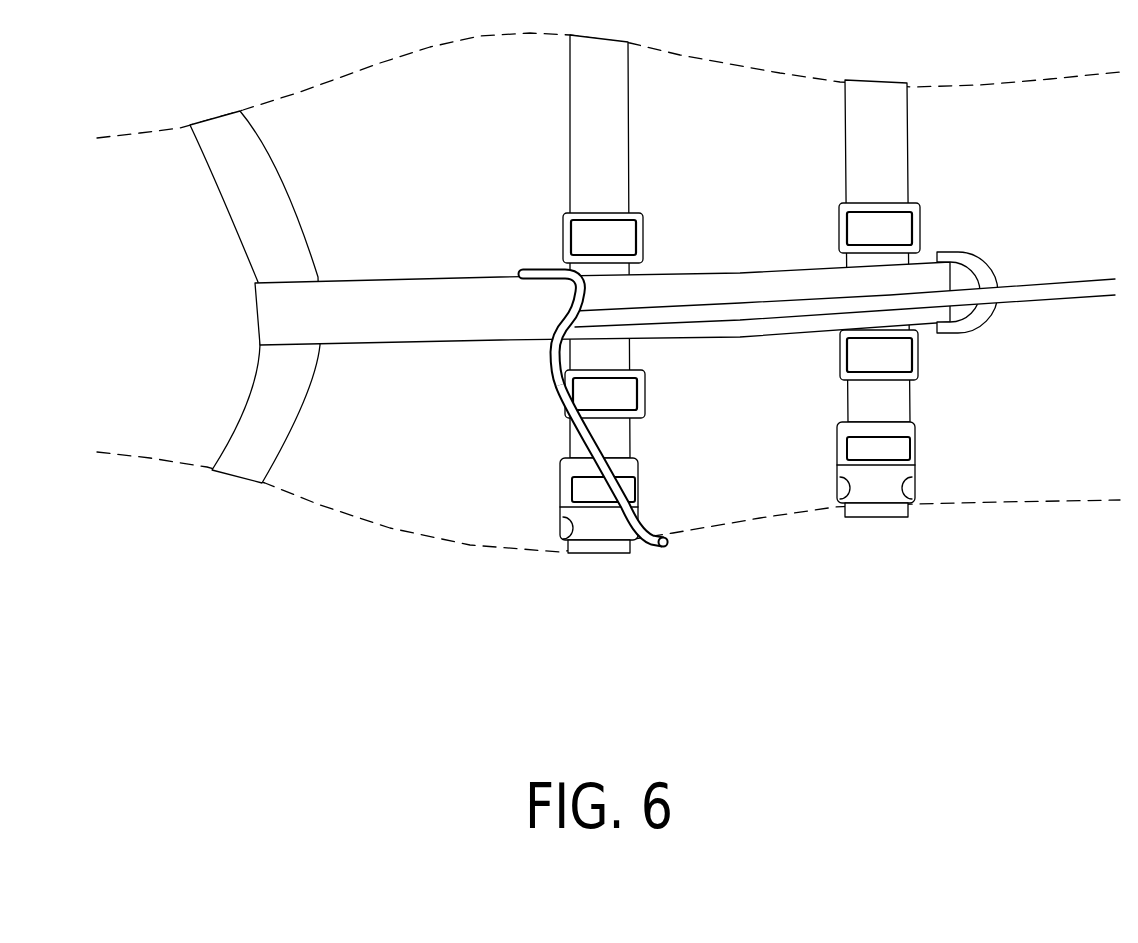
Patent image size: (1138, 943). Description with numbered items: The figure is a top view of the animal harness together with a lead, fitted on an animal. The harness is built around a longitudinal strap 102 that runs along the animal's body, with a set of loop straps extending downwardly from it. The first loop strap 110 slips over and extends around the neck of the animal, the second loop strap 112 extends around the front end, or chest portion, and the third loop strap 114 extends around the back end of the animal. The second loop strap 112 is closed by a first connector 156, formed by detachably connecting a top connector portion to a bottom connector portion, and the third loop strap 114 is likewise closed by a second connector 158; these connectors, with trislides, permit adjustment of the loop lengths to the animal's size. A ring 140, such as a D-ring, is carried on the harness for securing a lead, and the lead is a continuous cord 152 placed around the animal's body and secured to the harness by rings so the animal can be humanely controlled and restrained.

The longitudinal strap 102 is at (420, 278).
The first loop strap 110 is at (242, 467).
The second loop strap 112 is at (610, 138).
The third loop strap 114 is at (895, 165).
The ring 140 is at (535, 265).
The continuous cord 152 is at (658, 548).
The first connector 156 is at (627, 467).
The second connector 158 is at (900, 472).